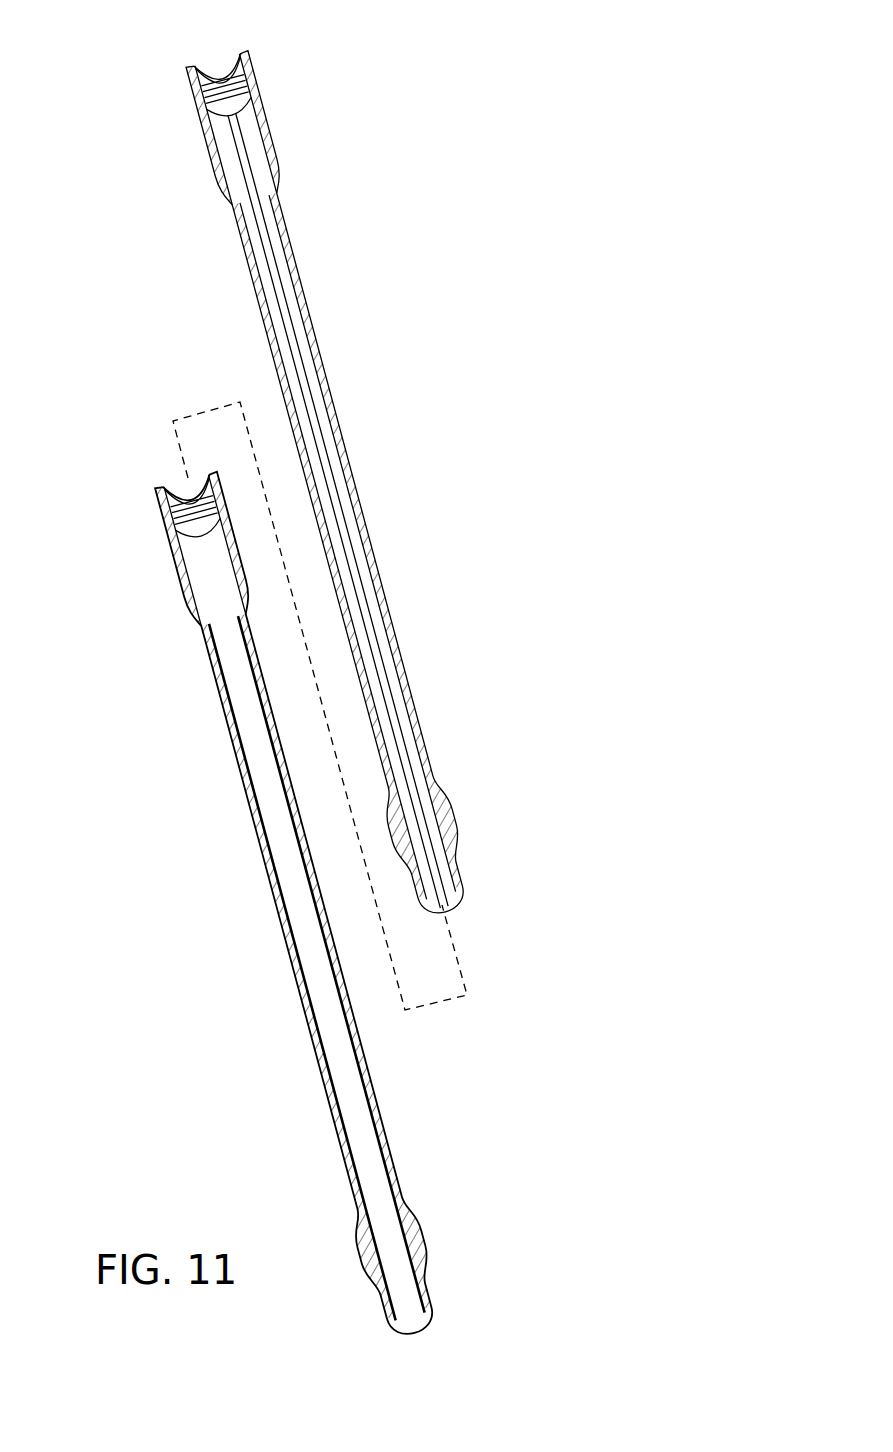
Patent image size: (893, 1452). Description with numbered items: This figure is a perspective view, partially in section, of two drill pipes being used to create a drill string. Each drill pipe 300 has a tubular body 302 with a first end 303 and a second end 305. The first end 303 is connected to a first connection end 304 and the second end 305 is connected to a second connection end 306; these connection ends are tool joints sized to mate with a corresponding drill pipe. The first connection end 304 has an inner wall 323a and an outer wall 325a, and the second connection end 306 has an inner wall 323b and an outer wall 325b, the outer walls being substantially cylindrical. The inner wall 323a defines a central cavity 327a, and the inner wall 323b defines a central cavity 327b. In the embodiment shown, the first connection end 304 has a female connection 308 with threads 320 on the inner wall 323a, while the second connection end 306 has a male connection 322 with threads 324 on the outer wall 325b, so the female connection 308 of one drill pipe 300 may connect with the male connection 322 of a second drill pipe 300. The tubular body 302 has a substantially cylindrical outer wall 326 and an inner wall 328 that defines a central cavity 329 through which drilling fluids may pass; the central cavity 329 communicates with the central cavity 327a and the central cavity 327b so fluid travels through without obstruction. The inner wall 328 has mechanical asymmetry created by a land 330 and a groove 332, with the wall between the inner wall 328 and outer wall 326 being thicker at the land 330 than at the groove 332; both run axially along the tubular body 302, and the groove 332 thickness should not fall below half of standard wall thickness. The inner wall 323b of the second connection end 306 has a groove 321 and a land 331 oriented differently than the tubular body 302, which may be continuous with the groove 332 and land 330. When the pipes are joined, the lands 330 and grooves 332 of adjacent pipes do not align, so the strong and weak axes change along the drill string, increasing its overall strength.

The drill pipe 300 is at (260, 84).
The tubular body 302 is at (268, 266).
The first end 303 is at (268, 135).
The first connection end 304 is at (200, 106).
The second end 305 is at (440, 785).
The second connection end 306 is at (240, 204).
The female connection 308 is at (244, 62).
The threads 320 is at (232, 125).
The groove 321 is at (426, 770).
The male connection 322 is at (463, 900).
The inner wall 323a is at (198, 68).
The inner wall 323b is at (446, 828).
The threads 324 is at (464, 890).
The outer wall 325a is at (264, 100).
The outer wall 325b is at (446, 785).
The outer wall 326 is at (366, 520).
The central cavity 327a is at (210, 80).
The central cavity 327b is at (441, 905).
The inner wall 328 is at (318, 370).
The central cavity 329 is at (283, 312).
The land 330 is at (272, 246).
The land 331 is at (433, 852).
The groove 332 is at (304, 317).